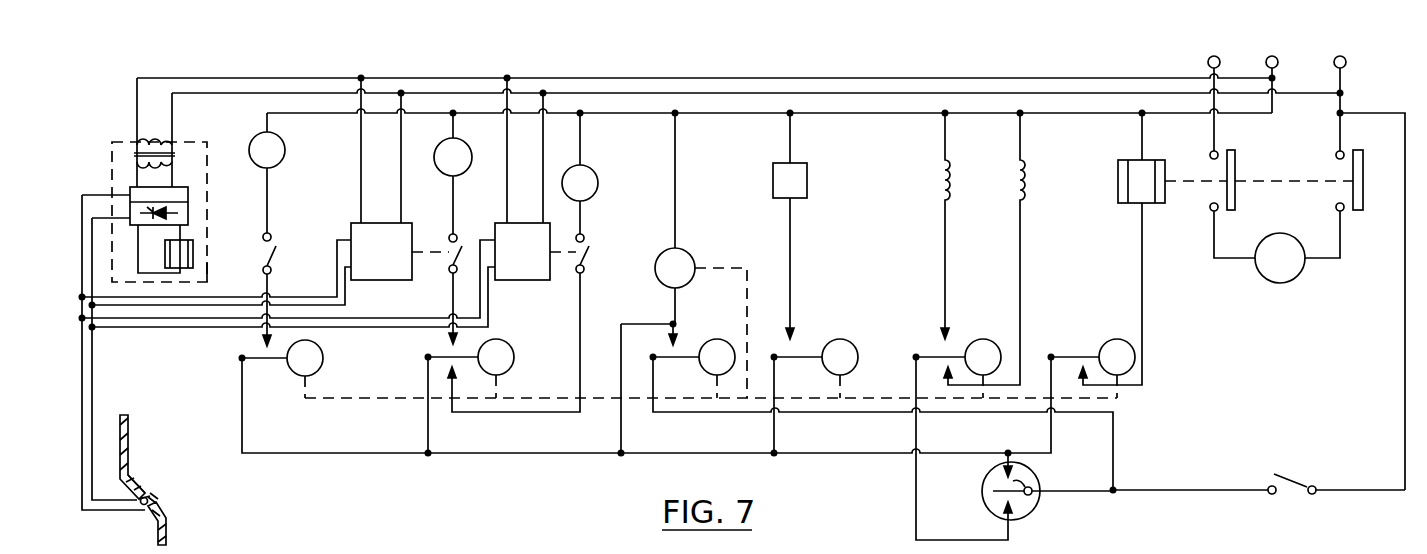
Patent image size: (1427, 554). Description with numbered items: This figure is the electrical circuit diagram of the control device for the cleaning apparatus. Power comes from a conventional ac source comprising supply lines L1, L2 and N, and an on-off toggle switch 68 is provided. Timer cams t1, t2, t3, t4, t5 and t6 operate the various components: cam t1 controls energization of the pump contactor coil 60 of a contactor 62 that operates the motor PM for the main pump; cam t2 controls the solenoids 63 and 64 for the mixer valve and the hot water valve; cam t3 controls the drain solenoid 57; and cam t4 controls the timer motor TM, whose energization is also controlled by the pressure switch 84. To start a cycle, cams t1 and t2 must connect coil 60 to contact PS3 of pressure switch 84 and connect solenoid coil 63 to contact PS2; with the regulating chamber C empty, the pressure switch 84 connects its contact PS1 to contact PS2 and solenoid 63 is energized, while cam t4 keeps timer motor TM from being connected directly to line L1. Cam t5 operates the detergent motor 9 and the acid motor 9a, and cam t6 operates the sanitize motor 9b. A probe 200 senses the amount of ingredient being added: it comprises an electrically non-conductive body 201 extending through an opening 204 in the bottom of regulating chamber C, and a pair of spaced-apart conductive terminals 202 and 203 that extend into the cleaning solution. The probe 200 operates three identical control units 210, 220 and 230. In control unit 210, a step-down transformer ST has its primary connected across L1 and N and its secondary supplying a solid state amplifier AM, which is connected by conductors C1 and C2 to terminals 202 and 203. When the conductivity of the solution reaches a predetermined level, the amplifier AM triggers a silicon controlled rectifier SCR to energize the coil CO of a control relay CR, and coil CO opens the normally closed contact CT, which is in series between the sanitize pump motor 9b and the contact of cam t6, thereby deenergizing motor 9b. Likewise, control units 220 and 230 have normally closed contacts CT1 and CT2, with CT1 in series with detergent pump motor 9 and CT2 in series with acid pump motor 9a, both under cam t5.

The control unit 210 is at (207, 186).
The step-down transformer ST is at (174, 155).
The solid state amplifier AM is at (186, 190).
The silicon controlled rectifier SCR is at (168, 213).
The coil CO is at (194, 251).
The control relay CR is at (211, 267).
The sanitize pump motor 9b is at (285, 150).
The normally closed contact CT is at (269, 262).
The control unit 220 is at (372, 282).
The detergent pump motor 9 is at (467, 149).
The normally closed contact CT1 is at (456, 258).
The control unit 230 is at (515, 282).
The acid pump motor 9a is at (594, 172).
The normally closed contact CT2 is at (583, 262).
The timer motor TM is at (690, 252).
The drain solenoid 57 is at (807, 178).
The solenoid 64 is at (938, 188).
The solenoid coil 63 is at (1012, 183).
The pump contactor coil 60 is at (1130, 140).
The contactor 62 is at (1300, 169).
The supply line L2 is at (1228, 145).
The neutral supply line N is at (1272, 72).
The supply line L1 is at (1328, 145).
The pump motor PM is at (1289, 283).
The on-off toggle switch 68 is at (1292, 480).
The pressure switch 84 is at (1032, 469).
The pressure switch contact PS1 is at (1036, 480).
The pressure switch contact PS2 is at (1016, 516).
The pressure switch contact PS3 is at (993, 464).
The timer cam t1 is at (1093, 368).
The timer cam t2 is at (958, 368).
The timer cam t3 is at (816, 396).
The timer cam t4 is at (694, 368).
The timer cam t5 is at (471, 396).
The timer cam t6 is at (282, 369).
The conductor C1 is at (83, 360).
The conductor C2 is at (93, 377).
The regulating chamber C is at (118, 421).
The probe 200 is at (141, 477).
The electrically non-conductive body 201 is at (162, 510).
The electrically conductive terminal 202 is at (160, 500).
The electrically conductive terminal 203 is at (152, 493).
The opening 204 is at (158, 513).